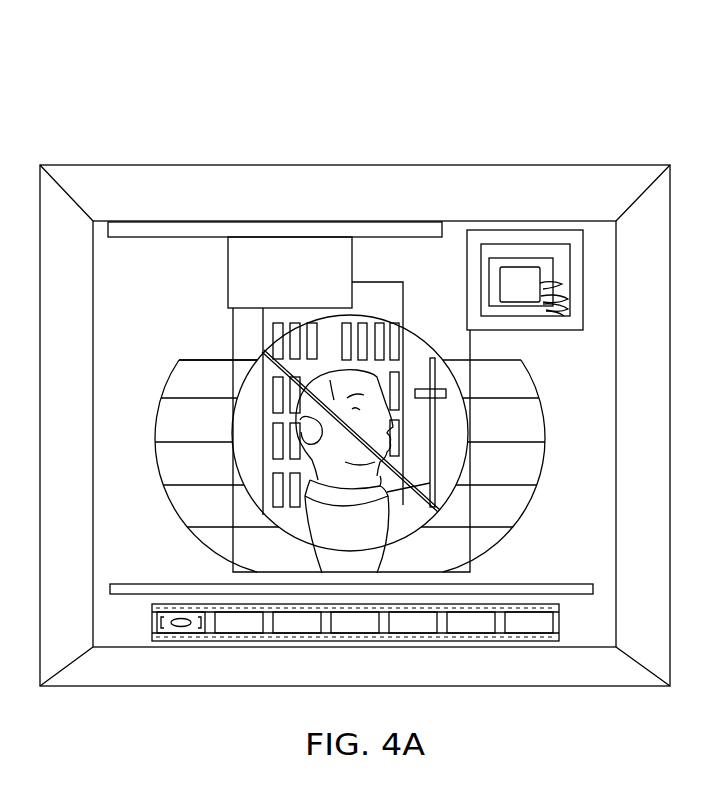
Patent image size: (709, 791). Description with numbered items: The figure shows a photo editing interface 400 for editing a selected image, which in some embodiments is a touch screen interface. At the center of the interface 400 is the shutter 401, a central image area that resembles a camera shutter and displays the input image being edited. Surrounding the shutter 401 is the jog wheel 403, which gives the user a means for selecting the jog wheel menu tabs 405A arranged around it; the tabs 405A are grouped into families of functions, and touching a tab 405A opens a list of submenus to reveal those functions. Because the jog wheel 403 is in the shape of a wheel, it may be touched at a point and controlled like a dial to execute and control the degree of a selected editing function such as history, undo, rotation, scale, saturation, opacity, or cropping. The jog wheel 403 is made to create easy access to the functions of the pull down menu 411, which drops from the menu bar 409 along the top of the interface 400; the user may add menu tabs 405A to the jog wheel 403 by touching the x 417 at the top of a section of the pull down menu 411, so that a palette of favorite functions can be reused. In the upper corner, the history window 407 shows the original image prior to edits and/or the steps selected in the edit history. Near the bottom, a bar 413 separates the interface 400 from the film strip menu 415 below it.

The photo editing interface 400 is at (93, 98).
The shutter 401 is at (415, 333).
The jog wheel 403 is at (210, 358).
The jog wheel menu tabs 405A is at (335, 440).
The history window 407 is at (548, 230).
The menu bar 409 is at (140, 226).
The pull down menu 411 is at (298, 246).
The bar 413 is at (567, 592).
The film strip menu 415 is at (468, 627).
The x 417 is at (345, 242).